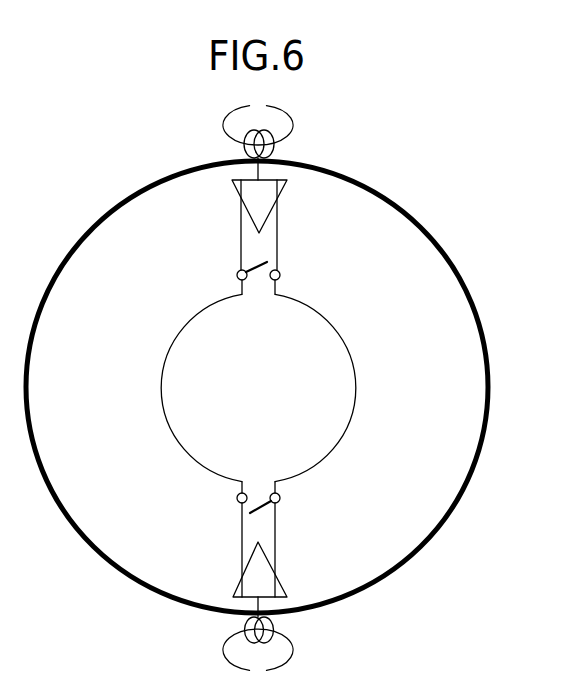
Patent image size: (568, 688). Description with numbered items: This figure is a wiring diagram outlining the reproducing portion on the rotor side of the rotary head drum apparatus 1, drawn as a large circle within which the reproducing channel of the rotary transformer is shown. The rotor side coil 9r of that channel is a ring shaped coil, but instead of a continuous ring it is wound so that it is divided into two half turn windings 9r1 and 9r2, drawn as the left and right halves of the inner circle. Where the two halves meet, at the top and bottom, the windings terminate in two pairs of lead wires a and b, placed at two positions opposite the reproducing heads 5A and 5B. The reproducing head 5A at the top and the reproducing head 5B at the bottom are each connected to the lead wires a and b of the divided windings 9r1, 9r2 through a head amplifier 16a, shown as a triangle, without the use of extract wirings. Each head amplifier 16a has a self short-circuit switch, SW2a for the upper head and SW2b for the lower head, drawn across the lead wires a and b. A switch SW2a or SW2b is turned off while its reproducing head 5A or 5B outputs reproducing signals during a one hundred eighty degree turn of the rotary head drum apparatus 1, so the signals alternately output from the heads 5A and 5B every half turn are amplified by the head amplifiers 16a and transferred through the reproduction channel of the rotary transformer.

The rotary head drum apparatus 1 is at (403, 203).
The reproducing head 5A is at (292, 123).
The reproducing head 5B is at (293, 648).
The rotor side coil 9r is at (241, 334).
The half turn winding 9r1 is at (160, 390).
The half turn winding 9r2 is at (355, 378).
The head amplifier 16a is at (270, 190).
The self short-circuit switch SW2a is at (215, 268).
The self short-circuit switch SW2b is at (297, 508).
The lead wire a is at (240, 285).
The lead wire b is at (242, 485).